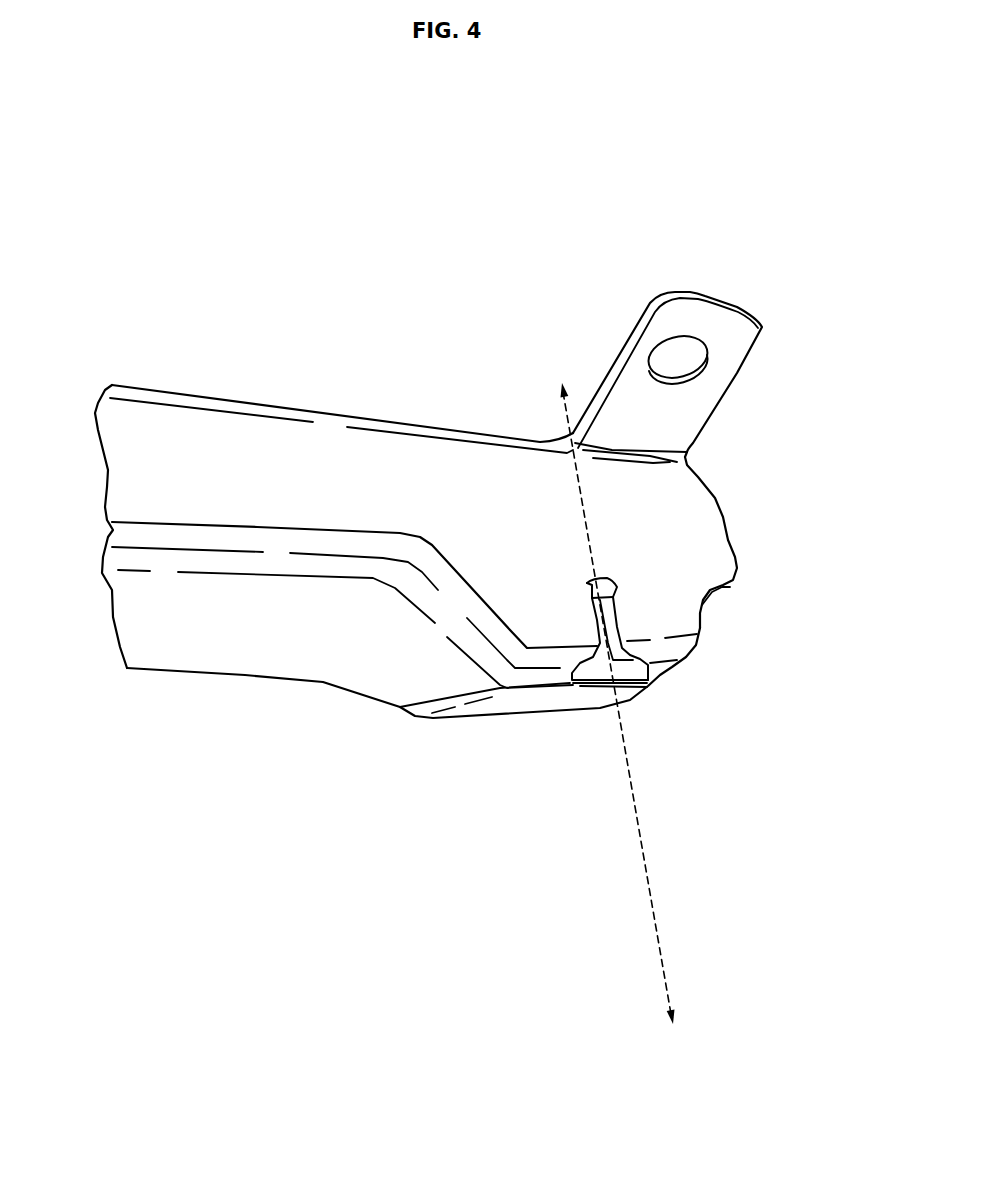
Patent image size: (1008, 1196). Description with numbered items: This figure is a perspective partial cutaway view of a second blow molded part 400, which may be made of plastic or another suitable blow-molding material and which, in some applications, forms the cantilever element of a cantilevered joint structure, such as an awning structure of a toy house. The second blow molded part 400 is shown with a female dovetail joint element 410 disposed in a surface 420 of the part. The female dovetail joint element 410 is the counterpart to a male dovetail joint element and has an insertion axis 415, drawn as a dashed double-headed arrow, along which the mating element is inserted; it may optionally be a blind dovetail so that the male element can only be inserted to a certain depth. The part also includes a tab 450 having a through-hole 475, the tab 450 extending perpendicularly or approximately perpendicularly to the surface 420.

The second blow molded part 400 is at (205, 186).
The female dovetail joint element 410 is at (595, 680).
The insertion axis 415 is at (660, 976).
The surface 420 is at (667, 555).
The tab 450 is at (732, 340).
The through-hole 475 is at (677, 353).